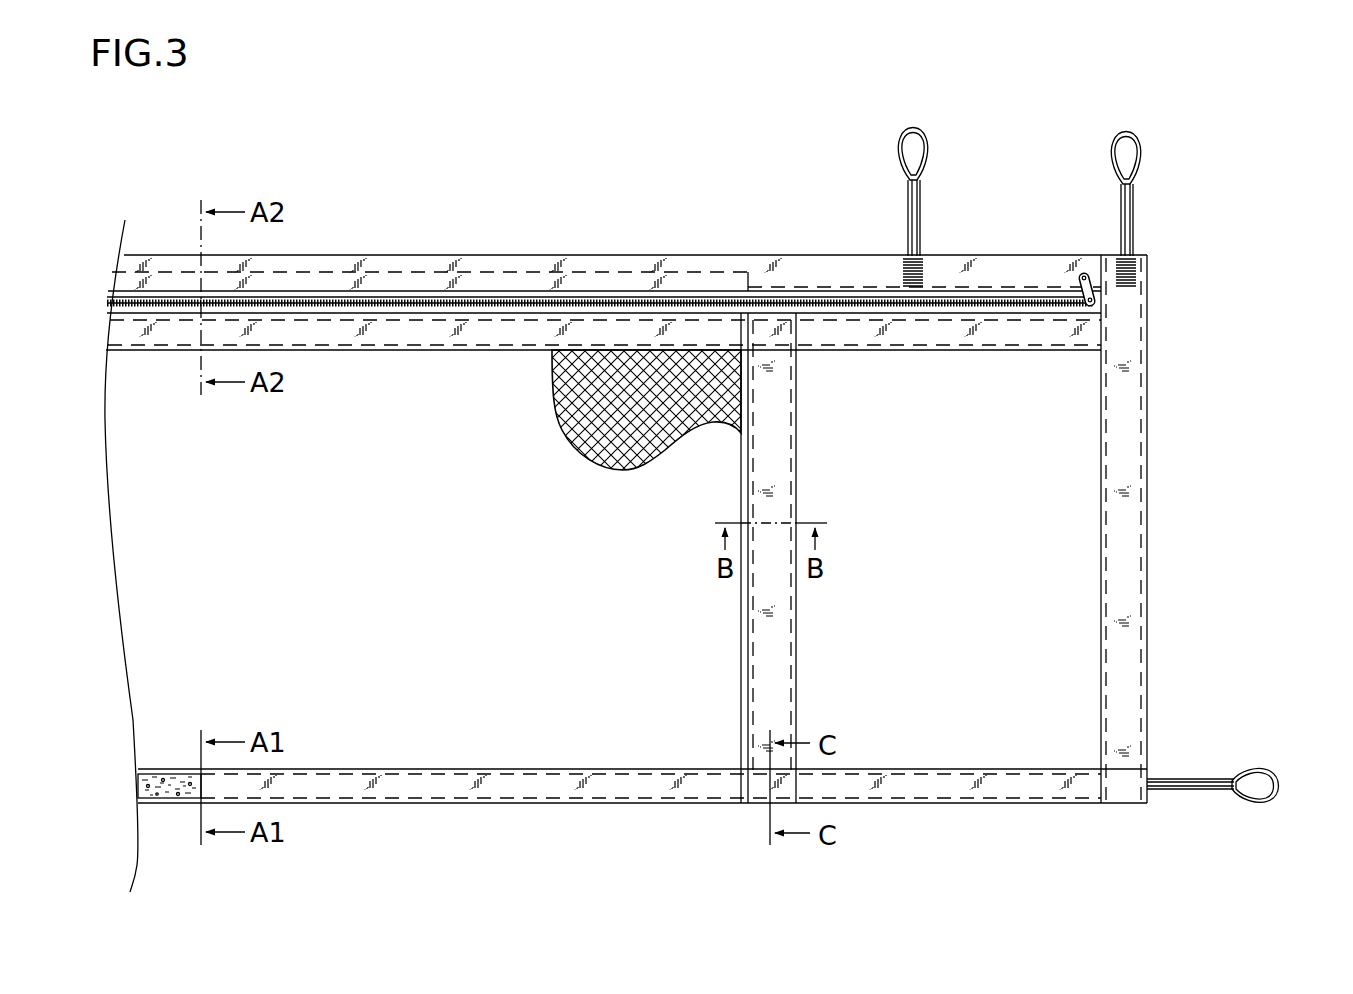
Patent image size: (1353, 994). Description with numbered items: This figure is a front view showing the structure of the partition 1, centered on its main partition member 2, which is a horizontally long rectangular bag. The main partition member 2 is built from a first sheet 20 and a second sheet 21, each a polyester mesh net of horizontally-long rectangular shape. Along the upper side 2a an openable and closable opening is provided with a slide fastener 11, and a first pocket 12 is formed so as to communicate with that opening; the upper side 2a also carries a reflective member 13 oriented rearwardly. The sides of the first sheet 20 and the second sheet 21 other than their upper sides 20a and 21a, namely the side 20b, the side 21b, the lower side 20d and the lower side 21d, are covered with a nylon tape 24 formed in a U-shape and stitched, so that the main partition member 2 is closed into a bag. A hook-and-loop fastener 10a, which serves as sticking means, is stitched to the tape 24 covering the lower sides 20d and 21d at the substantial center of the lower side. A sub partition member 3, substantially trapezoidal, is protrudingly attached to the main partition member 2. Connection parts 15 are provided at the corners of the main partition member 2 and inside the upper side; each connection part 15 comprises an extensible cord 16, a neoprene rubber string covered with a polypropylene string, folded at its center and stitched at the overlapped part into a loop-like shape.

The partition 1 is at (1183, 286).
The main partition member 2 is at (1152, 470).
The upper side 2a is at (445, 255).
The sub partition member 3 is at (772, 433).
The hook-and-loop fastener 10a is at (170, 785).
The slide fastener 11 is at (1000, 300).
The first pocket 12 is at (604, 244).
The reflective member 13 is at (370, 281).
The connection part 15 is at (902, 126).
The extensible cord 16 is at (909, 196).
The first sheet 20 is at (1191, 529).
The second sheet 21 is at (1191, 529).
The upper side of the first sheet 20a is at (820, 335).
The upper side of the second sheet 21a is at (603, 258).
The side of the first sheet 20b is at (1100, 392).
The side of the second sheet 21b is at (1202, 428).
The lower side of the first sheet 20d is at (655, 825).
The lower side of the second sheet 21d is at (655, 825).
The nylon tape 24 is at (1062, 795).